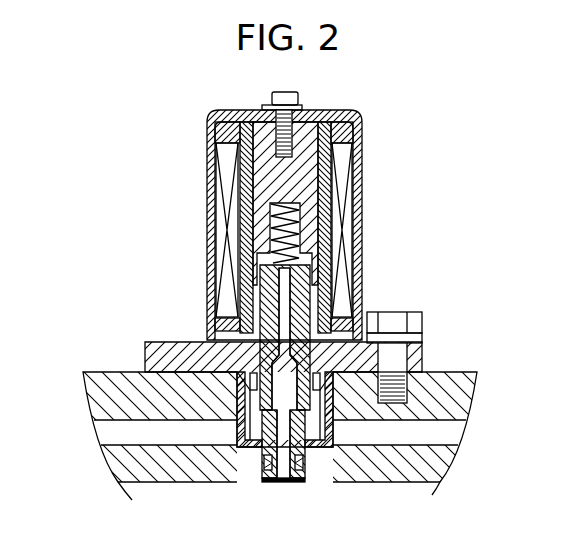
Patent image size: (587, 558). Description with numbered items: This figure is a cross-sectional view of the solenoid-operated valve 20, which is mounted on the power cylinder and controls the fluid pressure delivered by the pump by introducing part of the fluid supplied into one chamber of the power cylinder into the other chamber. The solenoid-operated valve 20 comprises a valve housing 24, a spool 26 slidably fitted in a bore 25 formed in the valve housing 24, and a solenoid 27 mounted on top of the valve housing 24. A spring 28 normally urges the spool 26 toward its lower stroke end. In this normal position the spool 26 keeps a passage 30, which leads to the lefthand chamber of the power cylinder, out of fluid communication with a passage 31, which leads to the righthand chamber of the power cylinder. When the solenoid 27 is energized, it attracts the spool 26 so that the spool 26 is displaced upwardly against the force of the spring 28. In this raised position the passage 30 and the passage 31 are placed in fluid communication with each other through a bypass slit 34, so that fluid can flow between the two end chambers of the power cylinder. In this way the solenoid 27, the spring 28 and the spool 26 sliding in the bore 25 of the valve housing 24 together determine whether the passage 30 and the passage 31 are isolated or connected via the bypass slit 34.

The solenoid-operated valve 20 is at (372, 123).
The valve housing 24 is at (212, 355).
The bore 25 is at (266, 310).
The spool 26 is at (302, 305).
The solenoid 27 is at (341, 168).
The spring 28 is at (269, 218).
The passage 30 is at (132, 445).
The passage 31 is at (301, 482).
The bypass slit 34 is at (265, 404).